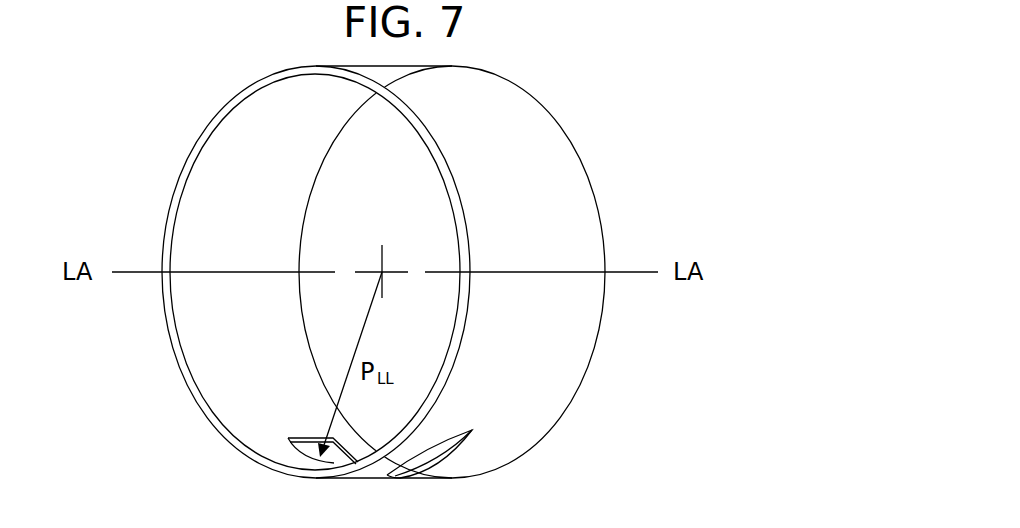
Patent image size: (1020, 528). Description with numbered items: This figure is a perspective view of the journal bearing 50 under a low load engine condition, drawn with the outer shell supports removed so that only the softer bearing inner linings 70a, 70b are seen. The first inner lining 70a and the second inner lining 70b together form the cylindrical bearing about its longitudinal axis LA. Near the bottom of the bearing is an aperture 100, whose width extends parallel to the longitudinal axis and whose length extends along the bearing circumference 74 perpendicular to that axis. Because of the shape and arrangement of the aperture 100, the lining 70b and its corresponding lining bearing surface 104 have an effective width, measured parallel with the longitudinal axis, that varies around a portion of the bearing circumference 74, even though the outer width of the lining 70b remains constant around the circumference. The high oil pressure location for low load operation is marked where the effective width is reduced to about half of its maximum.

The journal bearing 50 is at (122, 112).
The bearing inner lining 70a is at (552, 97).
The bearing inner lining 70b is at (568, 426).
The bearing circumference 74 is at (170, 390).
The aperture 100 is at (327, 446).
The lining bearing surface 104 is at (208, 195).